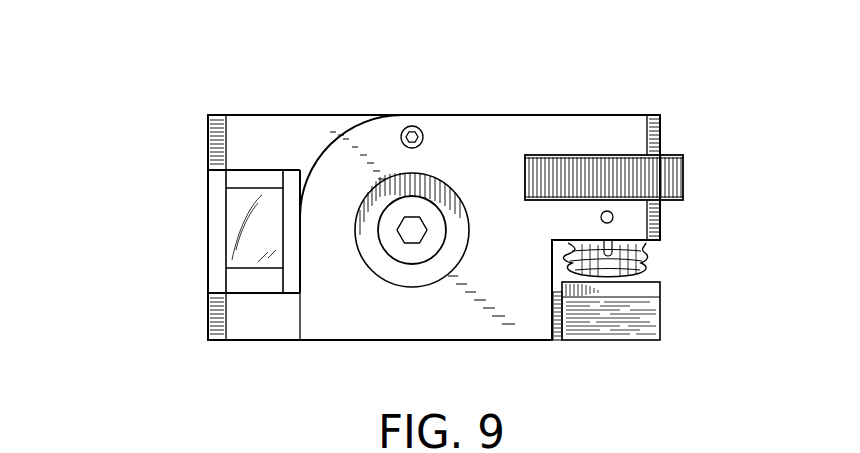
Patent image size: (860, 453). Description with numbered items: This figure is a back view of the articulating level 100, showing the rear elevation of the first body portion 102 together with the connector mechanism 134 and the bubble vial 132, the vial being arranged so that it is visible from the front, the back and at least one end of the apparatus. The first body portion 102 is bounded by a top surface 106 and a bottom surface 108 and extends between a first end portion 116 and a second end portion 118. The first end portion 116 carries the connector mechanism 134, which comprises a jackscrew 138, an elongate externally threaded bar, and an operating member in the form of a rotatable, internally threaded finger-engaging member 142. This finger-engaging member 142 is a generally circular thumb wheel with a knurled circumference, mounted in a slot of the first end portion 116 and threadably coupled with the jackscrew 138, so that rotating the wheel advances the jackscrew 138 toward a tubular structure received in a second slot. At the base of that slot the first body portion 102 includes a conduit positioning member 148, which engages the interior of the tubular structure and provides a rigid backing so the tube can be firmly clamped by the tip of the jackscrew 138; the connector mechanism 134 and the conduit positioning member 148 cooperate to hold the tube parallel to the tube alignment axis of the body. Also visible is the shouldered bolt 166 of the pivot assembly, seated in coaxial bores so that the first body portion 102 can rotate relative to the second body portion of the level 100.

The articulating level 100 is at (202, 78).
The first body portion 102 is at (652, 102).
The top surface 106 is at (512, 113).
The bottom surface 108 is at (352, 340).
The first end portion 116 is at (208, 145).
The second end portion 118 is at (300, 318).
The bubble vial 132 is at (225, 233).
The connector mechanism 134 is at (657, 255).
The jackscrew 138 is at (645, 263).
The finger-engaging member 142 is at (683, 174).
The conduit positioning member 148 is at (652, 336).
The shouldered bolt 166 is at (412, 262).